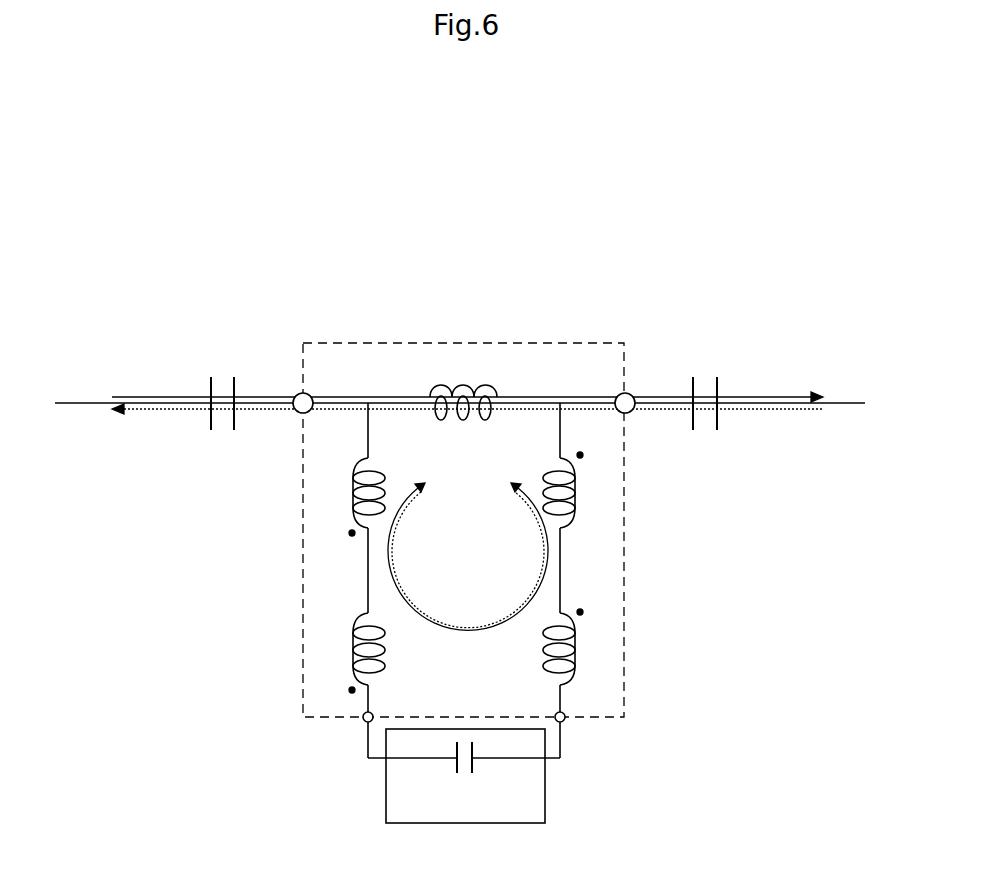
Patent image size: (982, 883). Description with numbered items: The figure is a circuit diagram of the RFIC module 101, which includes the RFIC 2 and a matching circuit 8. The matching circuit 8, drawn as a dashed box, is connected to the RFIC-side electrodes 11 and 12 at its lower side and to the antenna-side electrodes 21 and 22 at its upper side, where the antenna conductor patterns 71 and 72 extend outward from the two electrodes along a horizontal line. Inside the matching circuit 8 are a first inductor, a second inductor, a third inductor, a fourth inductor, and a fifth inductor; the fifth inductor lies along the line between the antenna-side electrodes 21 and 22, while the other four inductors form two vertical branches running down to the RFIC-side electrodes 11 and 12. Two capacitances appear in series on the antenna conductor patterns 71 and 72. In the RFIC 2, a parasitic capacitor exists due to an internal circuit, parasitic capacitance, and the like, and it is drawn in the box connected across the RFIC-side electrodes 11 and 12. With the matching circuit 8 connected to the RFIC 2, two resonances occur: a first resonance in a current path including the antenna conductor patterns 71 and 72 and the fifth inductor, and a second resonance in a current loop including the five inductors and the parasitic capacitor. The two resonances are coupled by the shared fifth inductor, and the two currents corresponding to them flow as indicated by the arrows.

The RFIC module 101 is at (747, 246).
The matching circuit 8 is at (537, 343).
The antenna conductor pattern 71 is at (95, 397).
The antenna conductor pattern 72 is at (836, 401).
The antenna-side electrode 21 is at (297, 414).
The antenna-side electrode 22 is at (634, 397).
The RFIC-side electrode 11 is at (363, 721).
The RFIC-side electrode 12 is at (565, 721).
The RFIC 2 is at (464, 823).